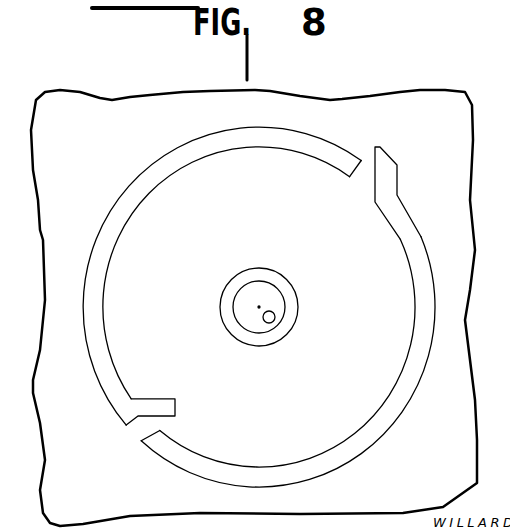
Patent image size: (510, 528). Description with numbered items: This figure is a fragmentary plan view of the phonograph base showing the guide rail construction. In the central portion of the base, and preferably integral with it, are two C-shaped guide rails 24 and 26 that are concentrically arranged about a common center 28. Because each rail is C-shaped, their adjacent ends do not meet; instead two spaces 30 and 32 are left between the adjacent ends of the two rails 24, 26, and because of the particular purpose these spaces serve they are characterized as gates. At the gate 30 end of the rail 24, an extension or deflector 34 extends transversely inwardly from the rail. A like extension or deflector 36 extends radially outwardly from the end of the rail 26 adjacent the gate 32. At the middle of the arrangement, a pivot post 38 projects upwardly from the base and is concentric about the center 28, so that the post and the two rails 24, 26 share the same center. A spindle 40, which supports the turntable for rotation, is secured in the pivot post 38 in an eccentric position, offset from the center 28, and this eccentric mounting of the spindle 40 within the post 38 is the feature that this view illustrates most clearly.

The C-shaped guide rail 24 is at (87, 323).
The C-shaped guide rail 26 is at (408, 395).
The common center 28 is at (247, 300).
The gate 30 is at (160, 427).
The gate 32 is at (362, 177).
The deflector 34 is at (165, 395).
The deflector 36 is at (390, 155).
The pivot post 38 is at (267, 282).
The spindle 40 is at (275, 320).